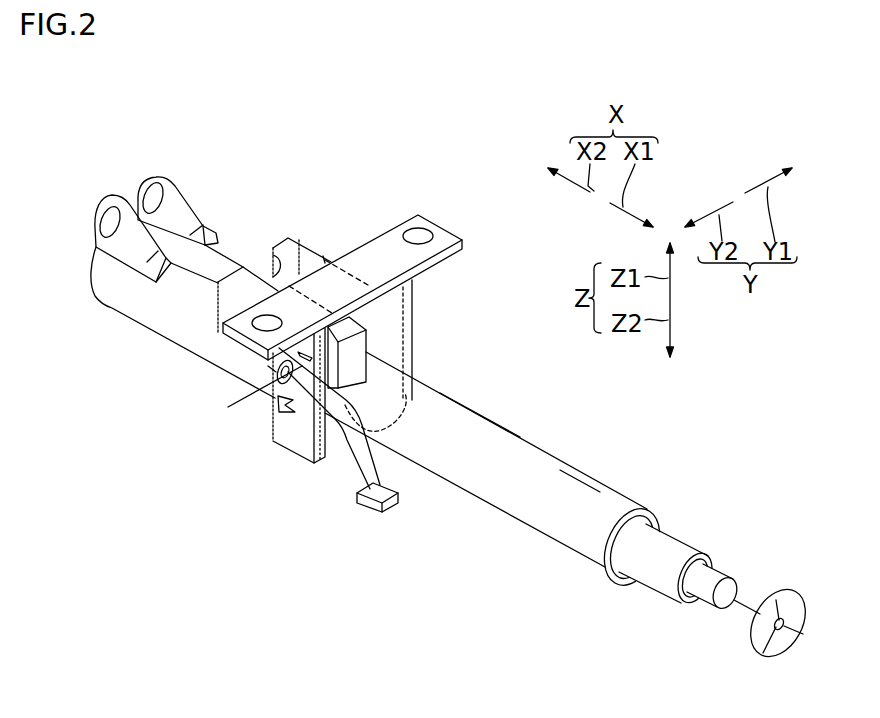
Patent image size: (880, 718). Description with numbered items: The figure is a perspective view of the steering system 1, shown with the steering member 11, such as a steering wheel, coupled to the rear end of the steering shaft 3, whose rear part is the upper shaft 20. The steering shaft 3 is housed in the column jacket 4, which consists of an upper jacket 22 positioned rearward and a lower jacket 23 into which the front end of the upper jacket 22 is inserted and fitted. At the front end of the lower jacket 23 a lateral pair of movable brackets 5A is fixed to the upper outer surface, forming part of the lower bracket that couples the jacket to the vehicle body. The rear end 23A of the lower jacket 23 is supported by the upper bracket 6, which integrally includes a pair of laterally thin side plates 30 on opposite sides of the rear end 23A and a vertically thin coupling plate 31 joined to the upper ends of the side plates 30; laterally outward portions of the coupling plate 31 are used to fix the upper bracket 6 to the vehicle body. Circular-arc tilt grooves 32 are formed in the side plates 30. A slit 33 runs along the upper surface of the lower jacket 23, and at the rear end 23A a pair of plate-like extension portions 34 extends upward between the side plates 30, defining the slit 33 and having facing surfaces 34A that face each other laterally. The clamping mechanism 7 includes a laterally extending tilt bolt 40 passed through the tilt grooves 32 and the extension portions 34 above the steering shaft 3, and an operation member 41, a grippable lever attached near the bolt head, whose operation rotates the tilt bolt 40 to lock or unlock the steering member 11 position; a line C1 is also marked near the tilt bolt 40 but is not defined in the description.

The steering system 1 is at (728, 468).
The steering shaft 3 is at (664, 527).
The column jacket 4 is at (592, 463).
The movable brackets 5A is at (117, 195).
The upper bracket 6 is at (305, 432).
The clamping mechanism 7 is at (267, 368).
The steering member 11 is at (787, 592).
The upper shaft 20 is at (688, 553).
The upper jacket 22 is at (535, 460).
The lower jacket 23 is at (138, 306).
The rear end of the lower jacket 23A is at (392, 432).
The side plates 30 is at (413, 289).
The coupling plate 31 is at (388, 235).
The tilt grooves 32 is at (280, 413).
The slit 33 is at (290, 265).
The extension portions 34 is at (323, 258).
The facing surfaces 34A is at (282, 277).
The tilt bolt 40 is at (280, 381).
The operation member 41 is at (360, 458).
The bolt axis C1 is at (233, 400).